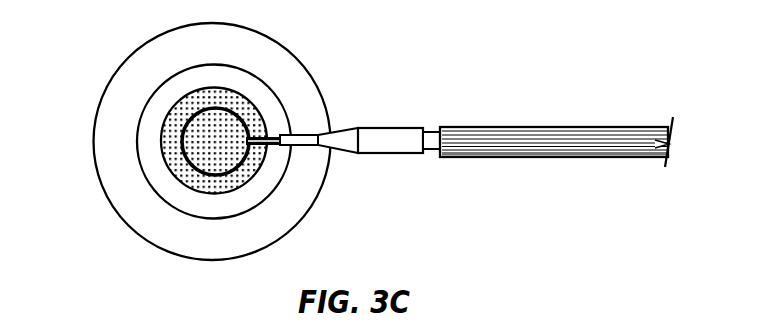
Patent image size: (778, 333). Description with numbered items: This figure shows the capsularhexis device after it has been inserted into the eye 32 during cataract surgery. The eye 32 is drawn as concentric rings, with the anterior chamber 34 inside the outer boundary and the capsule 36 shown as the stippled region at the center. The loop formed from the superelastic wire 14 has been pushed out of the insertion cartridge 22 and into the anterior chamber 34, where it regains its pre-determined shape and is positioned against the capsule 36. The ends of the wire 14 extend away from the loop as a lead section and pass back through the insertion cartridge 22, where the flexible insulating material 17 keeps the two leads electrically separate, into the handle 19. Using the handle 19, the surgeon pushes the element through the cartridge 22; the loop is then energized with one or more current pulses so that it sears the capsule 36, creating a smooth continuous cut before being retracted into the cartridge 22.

The eye 32 is at (283, 43).
The anterior chamber 34 is at (168, 82).
The capsule 36 is at (183, 188).
The superelastic wire 14 is at (248, 173).
The insertion cartridge 22 is at (387, 127).
The insulating material 17 is at (430, 131).
The handle 19 is at (583, 125).